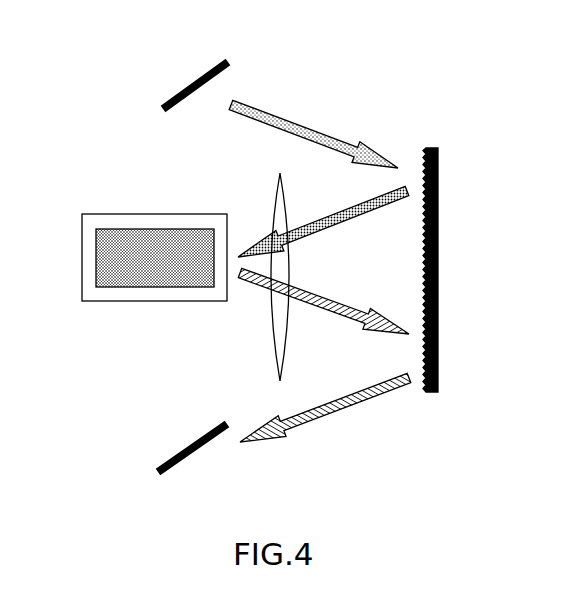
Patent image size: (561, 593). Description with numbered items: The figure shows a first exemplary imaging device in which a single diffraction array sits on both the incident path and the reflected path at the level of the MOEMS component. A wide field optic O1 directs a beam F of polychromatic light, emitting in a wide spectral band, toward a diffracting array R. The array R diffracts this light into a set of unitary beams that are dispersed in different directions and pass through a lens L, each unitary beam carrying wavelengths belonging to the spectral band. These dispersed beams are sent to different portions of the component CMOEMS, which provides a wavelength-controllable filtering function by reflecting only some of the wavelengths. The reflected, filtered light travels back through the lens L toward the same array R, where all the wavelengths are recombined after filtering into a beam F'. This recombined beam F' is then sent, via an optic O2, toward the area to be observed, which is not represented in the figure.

The wide field optic O1 is at (237, 61).
The beam of polychromatic light F is at (313, 125).
The lens L is at (288, 203).
The diffracting array R is at (439, 238).
The recombined beam F' is at (325, 409).
The optic O2 is at (200, 452).
The MOEMS component CMOEMS is at (130, 302).